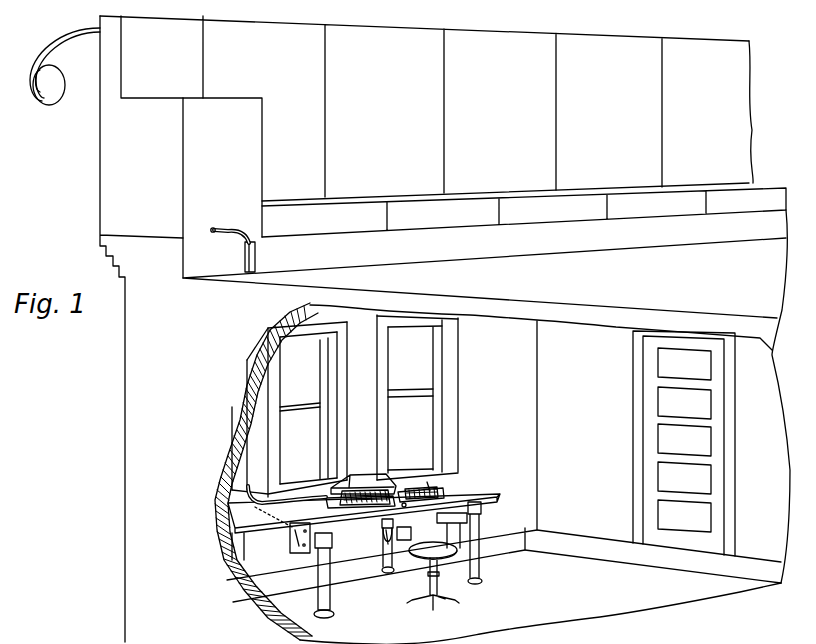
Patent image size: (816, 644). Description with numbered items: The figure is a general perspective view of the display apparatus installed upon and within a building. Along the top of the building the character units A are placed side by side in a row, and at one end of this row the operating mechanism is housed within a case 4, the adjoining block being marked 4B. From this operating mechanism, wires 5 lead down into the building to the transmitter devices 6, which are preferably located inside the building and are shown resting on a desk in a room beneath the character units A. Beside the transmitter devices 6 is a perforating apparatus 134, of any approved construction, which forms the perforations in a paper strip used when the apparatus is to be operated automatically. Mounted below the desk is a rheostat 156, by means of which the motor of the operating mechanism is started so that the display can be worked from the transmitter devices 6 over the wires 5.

The character unit A is at (443, 126).
The case 4 is at (106, 329).
The block 4B is at (222, 188).
The wires 5 is at (243, 233).
The transmitter devices 6 is at (361, 470).
The perforating apparatus 134 is at (436, 490).
The rheostat 156 is at (292, 553).